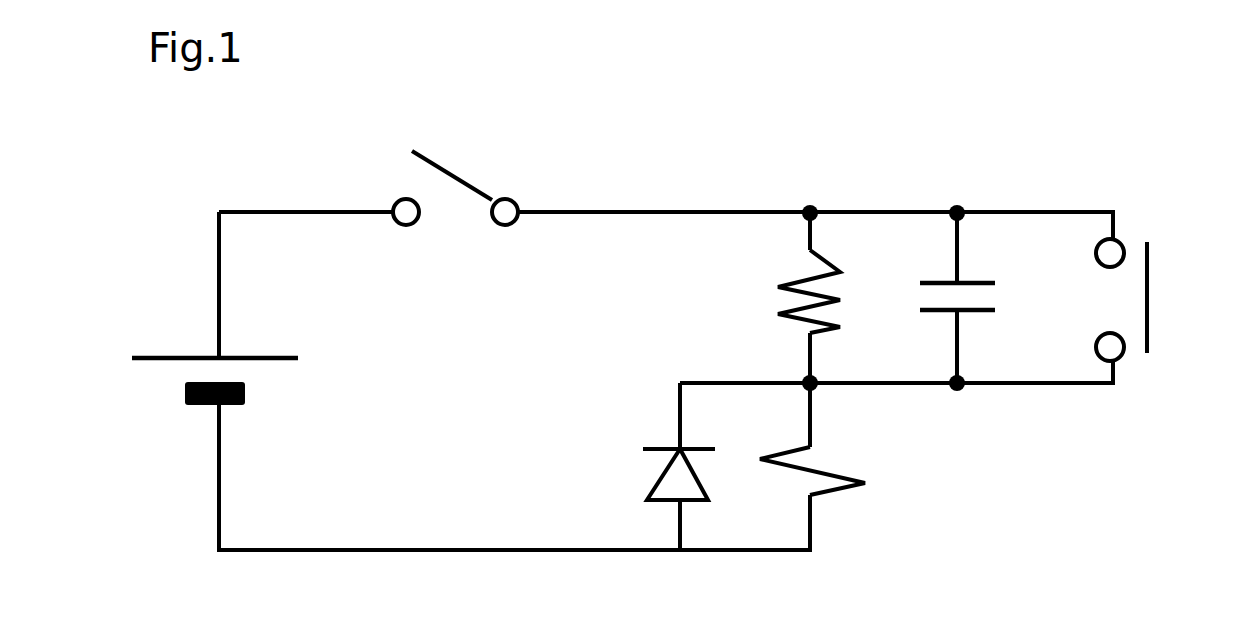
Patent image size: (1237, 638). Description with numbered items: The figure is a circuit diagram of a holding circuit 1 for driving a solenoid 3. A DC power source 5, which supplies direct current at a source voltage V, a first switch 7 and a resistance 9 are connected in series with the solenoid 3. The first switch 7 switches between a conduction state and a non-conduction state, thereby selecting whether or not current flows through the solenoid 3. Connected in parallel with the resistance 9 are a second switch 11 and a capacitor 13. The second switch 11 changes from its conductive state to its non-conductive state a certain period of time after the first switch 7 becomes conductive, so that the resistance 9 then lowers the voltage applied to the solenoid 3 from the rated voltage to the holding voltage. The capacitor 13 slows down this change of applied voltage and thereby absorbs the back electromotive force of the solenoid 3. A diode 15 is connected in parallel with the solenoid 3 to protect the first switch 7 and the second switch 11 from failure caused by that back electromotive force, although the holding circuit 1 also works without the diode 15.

The holding circuit 1 is at (1048, 178).
The solenoid 3 is at (880, 488).
The DC power source 5 is at (275, 388).
The first switch 7 is at (451, 237).
The resistance 9 is at (768, 285).
The second switch 11 is at (1167, 284).
The capacitor 13 is at (980, 262).
The diode 15 is at (632, 470).